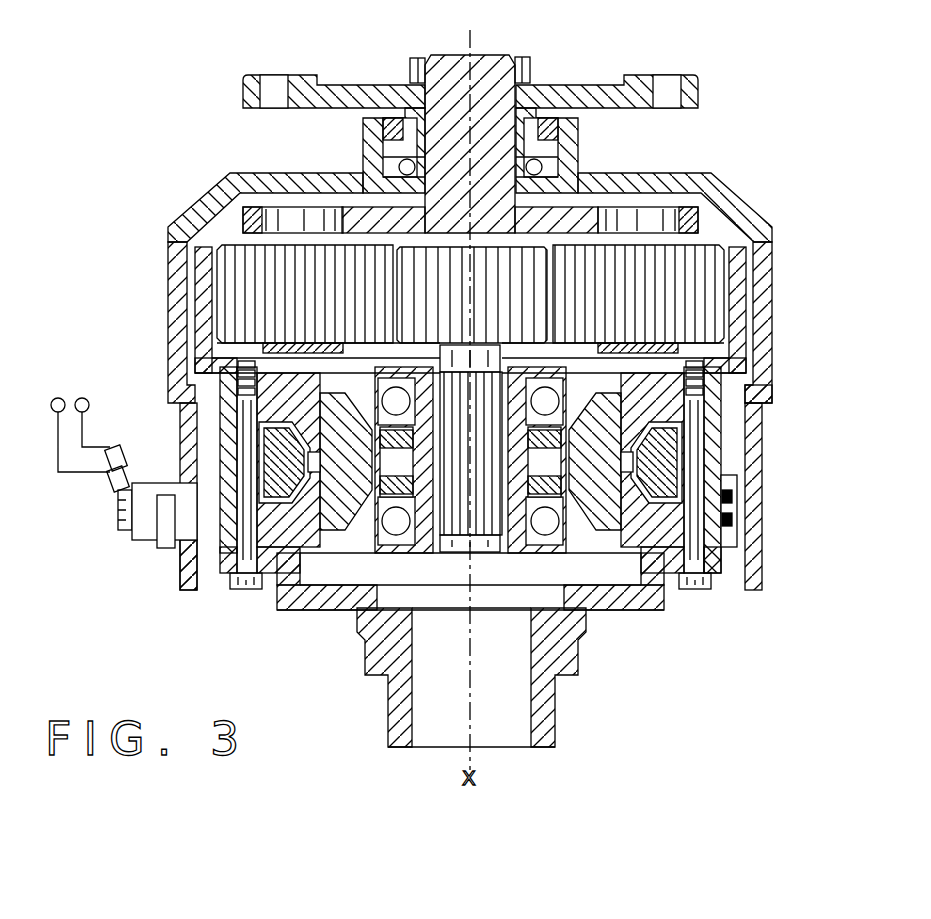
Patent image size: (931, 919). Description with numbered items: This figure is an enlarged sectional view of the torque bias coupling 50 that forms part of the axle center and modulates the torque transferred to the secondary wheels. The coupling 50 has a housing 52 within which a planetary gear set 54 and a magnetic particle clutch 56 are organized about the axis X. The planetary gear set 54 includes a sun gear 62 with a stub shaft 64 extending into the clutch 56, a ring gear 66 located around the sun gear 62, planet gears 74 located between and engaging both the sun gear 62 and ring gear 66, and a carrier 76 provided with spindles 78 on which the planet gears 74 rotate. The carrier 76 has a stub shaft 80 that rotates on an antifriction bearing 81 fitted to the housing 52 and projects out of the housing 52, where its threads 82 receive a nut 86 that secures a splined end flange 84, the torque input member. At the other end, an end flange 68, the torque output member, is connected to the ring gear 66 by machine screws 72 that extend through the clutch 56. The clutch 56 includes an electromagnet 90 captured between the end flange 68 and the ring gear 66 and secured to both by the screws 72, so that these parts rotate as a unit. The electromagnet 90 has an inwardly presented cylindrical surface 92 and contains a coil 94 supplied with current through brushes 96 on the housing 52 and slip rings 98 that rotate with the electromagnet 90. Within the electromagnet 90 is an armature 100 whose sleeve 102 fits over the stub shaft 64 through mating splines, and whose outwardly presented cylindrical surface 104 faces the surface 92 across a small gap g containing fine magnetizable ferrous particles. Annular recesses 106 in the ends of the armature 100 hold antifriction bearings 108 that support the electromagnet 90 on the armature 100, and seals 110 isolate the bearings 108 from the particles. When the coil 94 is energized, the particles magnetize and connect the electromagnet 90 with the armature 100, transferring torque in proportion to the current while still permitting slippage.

The torque bias coupling 50 is at (150, 265).
The housing 52 is at (168, 352).
The planetary gear set 54 is at (227, 232).
The magnetic particle clutch 56 is at (724, 410).
The sun gear 62 is at (527, 280).
The stub shaft 64 is at (460, 556).
The ring gear 66 is at (743, 297).
The end flange 68 is at (653, 607).
The machine screws 72 is at (697, 589).
The planet gears 74 is at (263, 293).
The carrier 76 is at (360, 222).
The spindles 78 is at (303, 230).
The stub shaft 80 is at (490, 65).
The antifriction bearing 81 is at (548, 160).
The threads 82 is at (531, 72).
The end flange 84 is at (360, 83).
The nut 86 is at (413, 62).
The electromagnet 90 is at (722, 426).
The cylindrical surface 92 is at (602, 480).
The coil 94 is at (662, 460).
The brushes 96 is at (146, 535).
The slip rings 98 is at (738, 500).
The armature 100 is at (190, 555).
The sleeve 102 is at (367, 670).
The cylindrical surface 104 is at (255, 542).
The annular recesses 106 is at (320, 542).
The antifriction bearings 108 is at (352, 545).
The seals 110 is at (372, 437).
The gap g is at (262, 410).